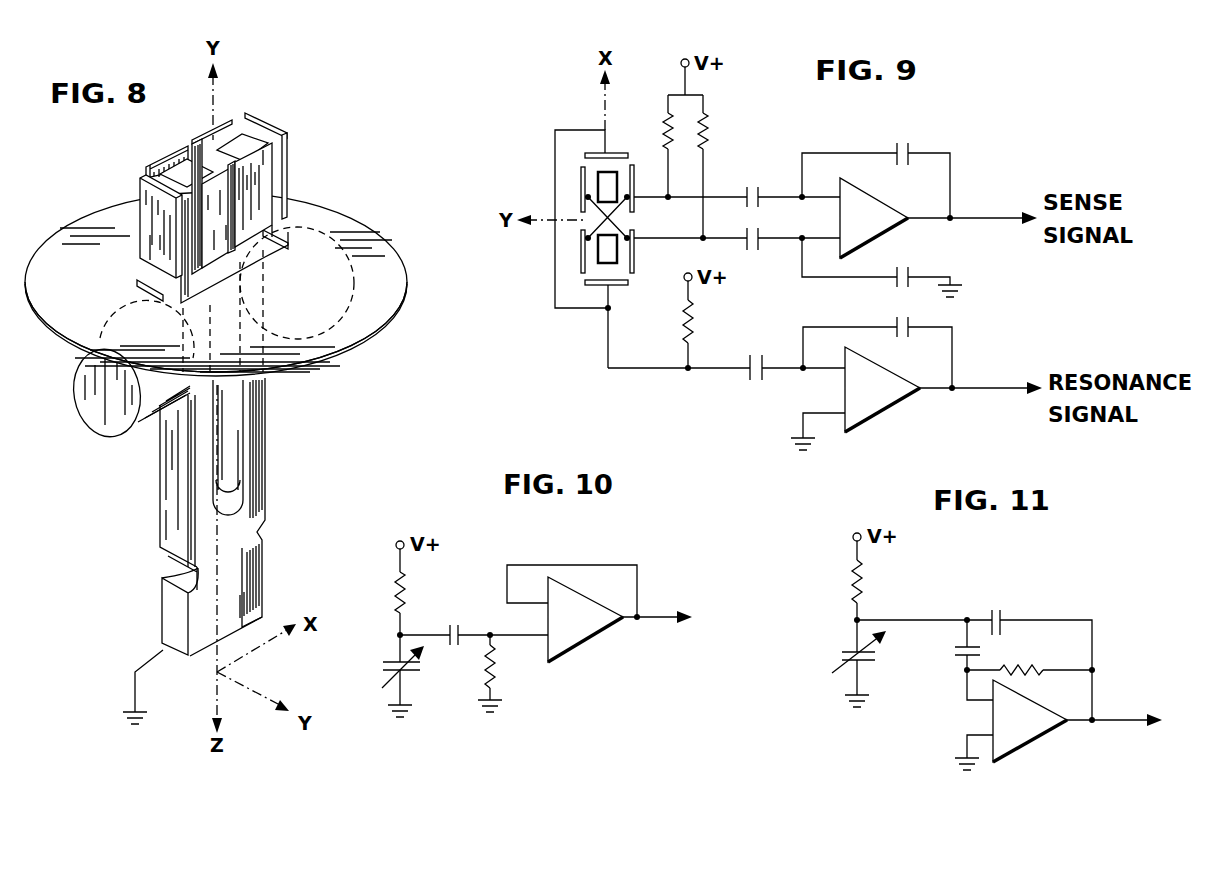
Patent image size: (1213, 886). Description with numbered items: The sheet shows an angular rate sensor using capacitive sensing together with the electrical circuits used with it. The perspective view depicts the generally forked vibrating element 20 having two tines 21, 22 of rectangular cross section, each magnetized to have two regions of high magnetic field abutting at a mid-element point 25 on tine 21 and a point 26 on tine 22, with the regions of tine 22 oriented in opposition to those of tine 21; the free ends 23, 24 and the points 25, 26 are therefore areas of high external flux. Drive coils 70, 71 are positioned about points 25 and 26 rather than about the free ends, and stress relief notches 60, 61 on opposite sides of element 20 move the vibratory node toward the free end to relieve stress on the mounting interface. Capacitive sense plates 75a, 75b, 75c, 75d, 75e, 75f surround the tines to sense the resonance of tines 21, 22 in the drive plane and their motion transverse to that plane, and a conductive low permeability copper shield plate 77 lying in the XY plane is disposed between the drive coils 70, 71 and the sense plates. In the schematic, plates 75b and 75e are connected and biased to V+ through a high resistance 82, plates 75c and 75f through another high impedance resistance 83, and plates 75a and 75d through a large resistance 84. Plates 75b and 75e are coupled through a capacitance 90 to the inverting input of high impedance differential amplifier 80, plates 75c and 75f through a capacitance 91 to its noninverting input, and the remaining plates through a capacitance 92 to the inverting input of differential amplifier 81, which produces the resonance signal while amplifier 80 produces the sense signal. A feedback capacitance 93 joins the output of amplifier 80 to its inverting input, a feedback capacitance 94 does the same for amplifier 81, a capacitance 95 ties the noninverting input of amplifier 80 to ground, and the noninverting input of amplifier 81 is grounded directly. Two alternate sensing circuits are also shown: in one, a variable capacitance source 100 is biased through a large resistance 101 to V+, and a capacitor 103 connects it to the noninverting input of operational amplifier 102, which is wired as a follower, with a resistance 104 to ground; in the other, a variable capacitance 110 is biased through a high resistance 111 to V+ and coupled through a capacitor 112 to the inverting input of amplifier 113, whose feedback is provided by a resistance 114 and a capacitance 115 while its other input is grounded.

In FIG. 8, the vibrating element 20 is at (226, 551).
In FIG. 8, the tine 21 is at (255, 430).
In FIG. 9, the tine 21 is at (597, 170).
In FIG. 8, the tine 22 is at (170, 466).
In FIG. 9, the tine 22 is at (600, 263).
In FIG. 8, the free end 23 is at (244, 144).
In FIG. 8, the free end 24 is at (182, 174).
In FIG. 8, the point 25 is at (300, 298).
In FIG. 8, the point 26 is at (145, 313).
In FIG. 8, the stress relief notch 60 is at (175, 565).
In FIG. 8, the stress relief notch 61 is at (260, 535).
In FIG. 8, the drive coil 70 is at (107, 425).
In FIG. 8, the drive coil 71 is at (372, 336).
In FIG. 8, the shield plate 77 is at (358, 223).
In FIG. 8, the capacitive sense plate 75a is at (285, 138).
In FIG. 9, the capacitive sense plate 75a is at (607, 151).
In FIG. 8, the capacitive sense plate 75b is at (258, 190).
In FIG. 9, the capacitive sense plate 75b is at (634, 203).
In FIG. 8, the capacitive sense plate 75c is at (218, 248).
In FIG. 9, the capacitive sense plate 75c is at (636, 258).
In FIG. 8, the capacitive sense plate 75d is at (147, 257).
In FIG. 9, the capacitive sense plate 75d is at (618, 287).
In FIG. 8, the capacitive sense plate 75e is at (147, 166).
In FIG. 9, the capacitive sense plate 75e is at (581, 262).
In FIG. 8, the capacitive sense plate 75f is at (205, 136).
In FIG. 9, the capacitive sense plate 75f is at (581, 183).
In FIG. 9, the differential amplifier 80 is at (882, 203).
In FIG. 9, the differential amplifier 81 is at (898, 400).
In FIG. 9, the high resistance 82 is at (667, 116).
In FIG. 9, the high impedance resistance 83 is at (710, 116).
In FIG. 9, the resistance 84 is at (694, 333).
In FIG. 9, the capacitance 90 is at (747, 188).
In FIG. 9, the capacitance 91 is at (760, 248).
In FIG. 9, the capacitance 92 is at (750, 375).
In FIG. 9, the feedback capacitance 93 is at (908, 148).
In FIG. 9, the feedback capacitance 94 is at (897, 323).
In FIG. 9, the capacitance 95 is at (908, 271).
In FIG. 10, the variable capacitance source 100 is at (415, 673).
In FIG. 10, the resistance 101 is at (405, 591).
In FIG. 10, the operational amplifier 102 is at (600, 636).
In FIG. 10, the capacitor 103 is at (460, 631).
In FIG. 10, the resistance 104 is at (492, 670).
In FIG. 11, the variable capacitance 110 is at (845, 648).
In FIG. 11, the resistance 111 is at (863, 582).
In FIG. 11, the capacitor 112 is at (958, 658).
In FIG. 11, the amplifier 113 is at (1043, 737).
In FIG. 11, the resistance 114 is at (1023, 666).
In FIG. 11, the capacitance 115 is at (1003, 617).